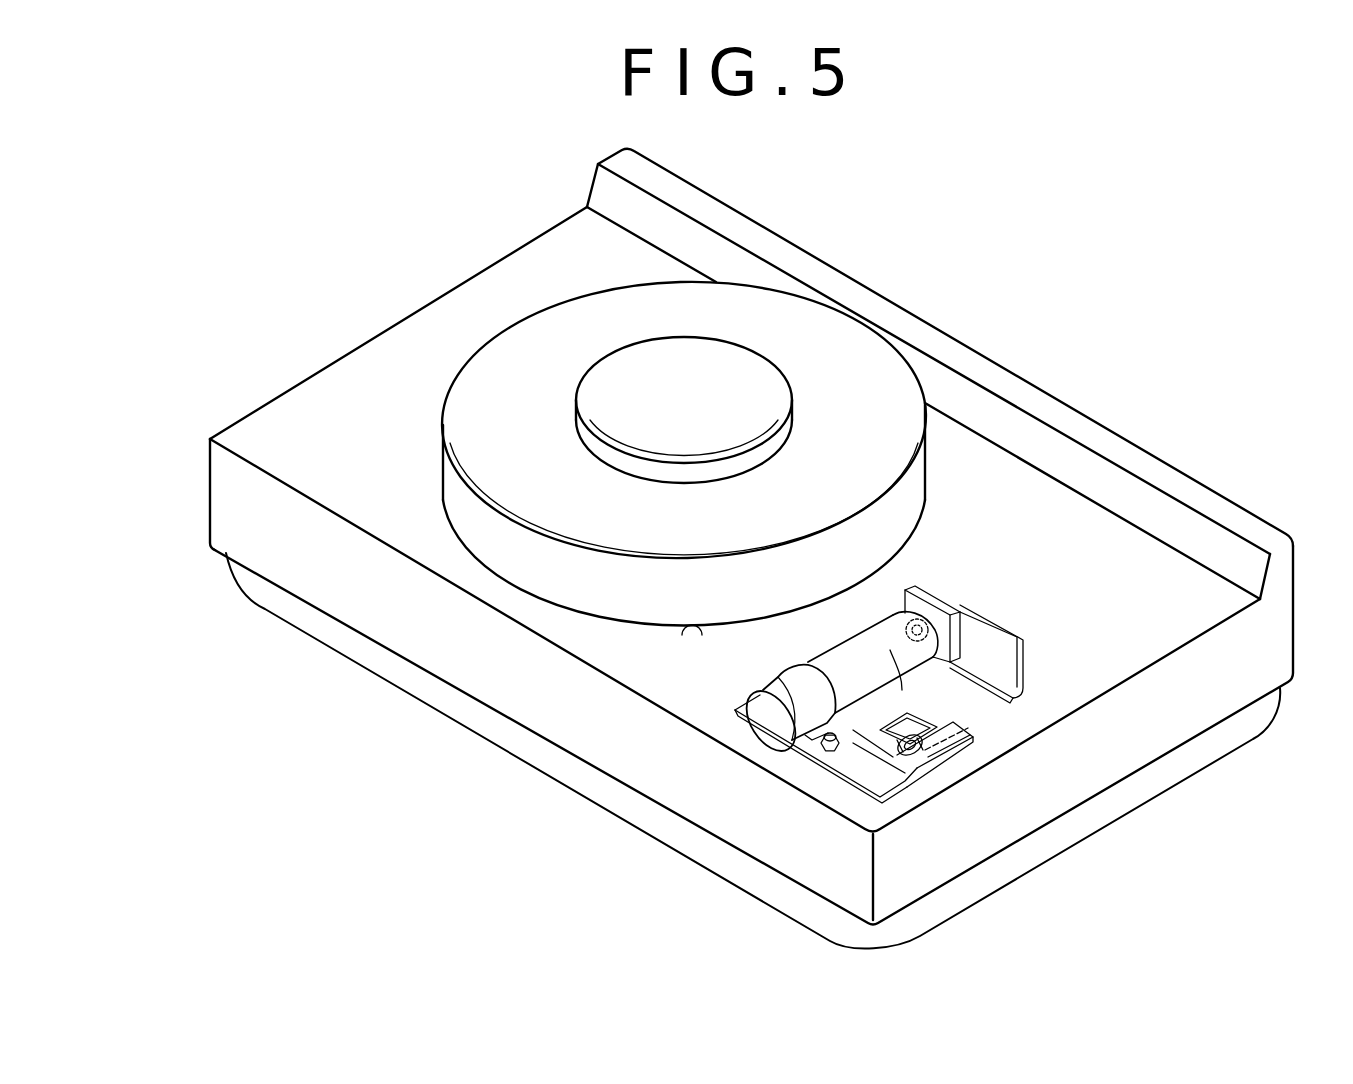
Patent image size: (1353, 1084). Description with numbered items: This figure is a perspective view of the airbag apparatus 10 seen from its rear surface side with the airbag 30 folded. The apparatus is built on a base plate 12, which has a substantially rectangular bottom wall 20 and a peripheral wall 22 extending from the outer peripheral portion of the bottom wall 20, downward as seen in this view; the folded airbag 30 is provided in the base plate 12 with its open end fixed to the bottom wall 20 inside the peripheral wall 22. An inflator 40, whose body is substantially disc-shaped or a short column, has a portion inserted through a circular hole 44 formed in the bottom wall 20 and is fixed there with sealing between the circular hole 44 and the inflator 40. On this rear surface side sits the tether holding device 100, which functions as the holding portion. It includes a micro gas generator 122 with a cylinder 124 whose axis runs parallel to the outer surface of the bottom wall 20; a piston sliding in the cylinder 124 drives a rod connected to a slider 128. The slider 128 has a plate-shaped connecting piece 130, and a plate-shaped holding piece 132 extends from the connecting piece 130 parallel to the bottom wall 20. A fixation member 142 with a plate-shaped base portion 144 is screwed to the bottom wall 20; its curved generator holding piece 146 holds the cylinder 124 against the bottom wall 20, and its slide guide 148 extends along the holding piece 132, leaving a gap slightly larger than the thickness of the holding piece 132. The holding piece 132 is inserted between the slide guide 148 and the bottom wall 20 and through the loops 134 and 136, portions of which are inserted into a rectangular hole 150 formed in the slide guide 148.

The airbag apparatus 10 is at (1028, 301).
The base plate 12 is at (460, 312).
The bottom wall 20 is at (307, 388).
The peripheral wall 22 is at (227, 493).
The airbag 30 is at (361, 643).
The inflator 40 is at (557, 316).
The circular hole 44 is at (707, 642).
The tether holding device 100 is at (956, 570).
The micro gas generator 122 is at (838, 635).
The cylinder 124 is at (768, 733).
The slider 128 is at (1022, 628).
The connecting piece 130 is at (978, 614).
The holding piece 132 is at (993, 696).
The loop 134 is at (915, 728).
The loop 136 is at (945, 745).
The fixation member 142 is at (826, 773).
The base portion 144 is at (887, 778).
The generator holding piece 146 is at (792, 683).
The slide guide 148 is at (968, 730).
The rectangular hole 150 is at (890, 650).